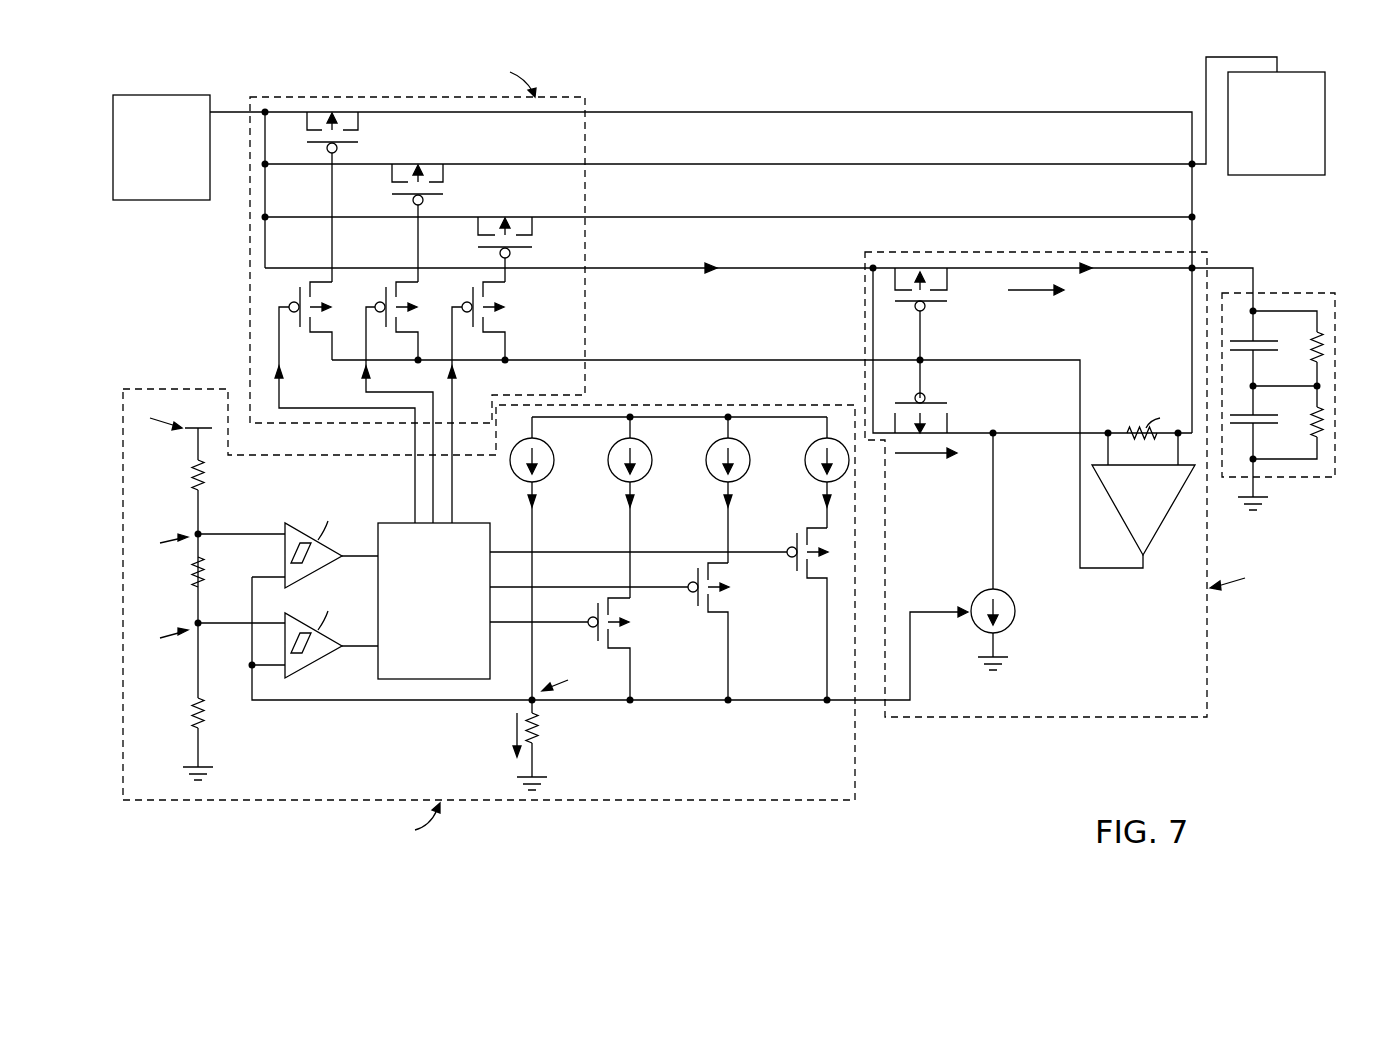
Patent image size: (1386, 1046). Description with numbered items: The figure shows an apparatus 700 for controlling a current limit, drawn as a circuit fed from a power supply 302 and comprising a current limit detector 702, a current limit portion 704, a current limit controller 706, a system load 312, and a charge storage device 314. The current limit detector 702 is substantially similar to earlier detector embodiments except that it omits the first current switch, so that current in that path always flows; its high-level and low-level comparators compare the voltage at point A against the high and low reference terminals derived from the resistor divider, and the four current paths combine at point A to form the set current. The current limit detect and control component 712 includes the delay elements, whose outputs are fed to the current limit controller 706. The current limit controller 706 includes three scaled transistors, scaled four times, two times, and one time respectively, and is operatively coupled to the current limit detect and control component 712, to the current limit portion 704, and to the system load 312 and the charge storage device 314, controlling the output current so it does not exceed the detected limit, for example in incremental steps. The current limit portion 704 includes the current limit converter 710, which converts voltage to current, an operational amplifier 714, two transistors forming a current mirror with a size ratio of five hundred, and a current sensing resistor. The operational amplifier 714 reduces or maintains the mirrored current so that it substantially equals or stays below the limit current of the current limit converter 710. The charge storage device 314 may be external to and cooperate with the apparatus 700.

The apparatus for controlling a current limit 700 is at (778, 58).
The power supply 302 is at (161, 147).
The system load 312 is at (1276, 123).
The charge storage device 314 is at (1298, 293).
The current limit detector 702 is at (710, 803).
The current limit portion 704 is at (1003, 252).
The current limit controller 706 is at (587, 141).
The current limit converter 710 is at (1005, 591).
The current limit detect and control component 712 is at (385, 522).
The operational amplifier 714 is at (1160, 525).